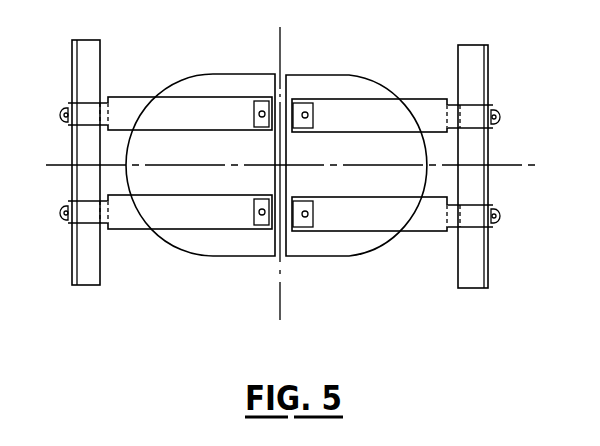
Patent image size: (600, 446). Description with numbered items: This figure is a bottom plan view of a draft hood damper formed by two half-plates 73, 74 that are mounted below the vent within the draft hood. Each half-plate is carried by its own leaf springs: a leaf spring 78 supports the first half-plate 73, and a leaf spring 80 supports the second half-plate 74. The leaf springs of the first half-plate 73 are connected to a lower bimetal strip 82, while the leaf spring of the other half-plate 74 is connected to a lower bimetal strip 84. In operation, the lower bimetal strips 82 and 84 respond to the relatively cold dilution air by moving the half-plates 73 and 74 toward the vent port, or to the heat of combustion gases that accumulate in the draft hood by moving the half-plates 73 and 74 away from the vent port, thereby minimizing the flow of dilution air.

The half-plate 73 is at (190, 76).
The half-plate 74 is at (345, 75).
The leaf spring 78 is at (222, 97).
The leaf spring 80 is at (331, 99).
The lower bimetal strip 82 is at (153, 112).
The lower bimetal strip 84 is at (387, 113).